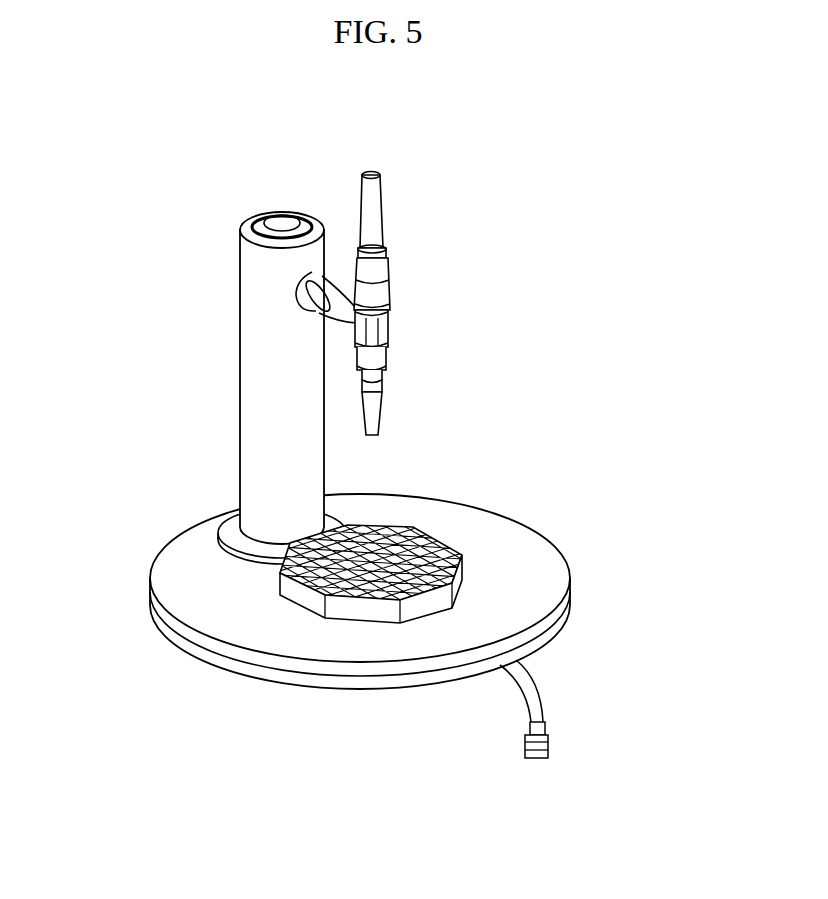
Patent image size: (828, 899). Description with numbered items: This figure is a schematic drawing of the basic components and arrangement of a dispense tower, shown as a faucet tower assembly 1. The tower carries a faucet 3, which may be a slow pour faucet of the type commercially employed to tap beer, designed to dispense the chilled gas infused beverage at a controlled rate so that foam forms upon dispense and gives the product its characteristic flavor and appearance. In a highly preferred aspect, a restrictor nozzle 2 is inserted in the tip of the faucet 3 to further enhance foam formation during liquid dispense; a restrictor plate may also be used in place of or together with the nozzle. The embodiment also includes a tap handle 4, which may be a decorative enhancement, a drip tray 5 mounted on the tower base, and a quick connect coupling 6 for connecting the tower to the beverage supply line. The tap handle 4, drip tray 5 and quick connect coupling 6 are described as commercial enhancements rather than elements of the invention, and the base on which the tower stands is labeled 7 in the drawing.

The faucet tower assembly 1 is at (232, 250).
The restrictor nozzle 2 is at (388, 398).
The faucet 3 is at (400, 309).
The tap handle 4 is at (391, 179).
The drip tray 5 is at (460, 546).
The quick connect coupling 6 is at (558, 745).
The base plate 7 is at (172, 644).